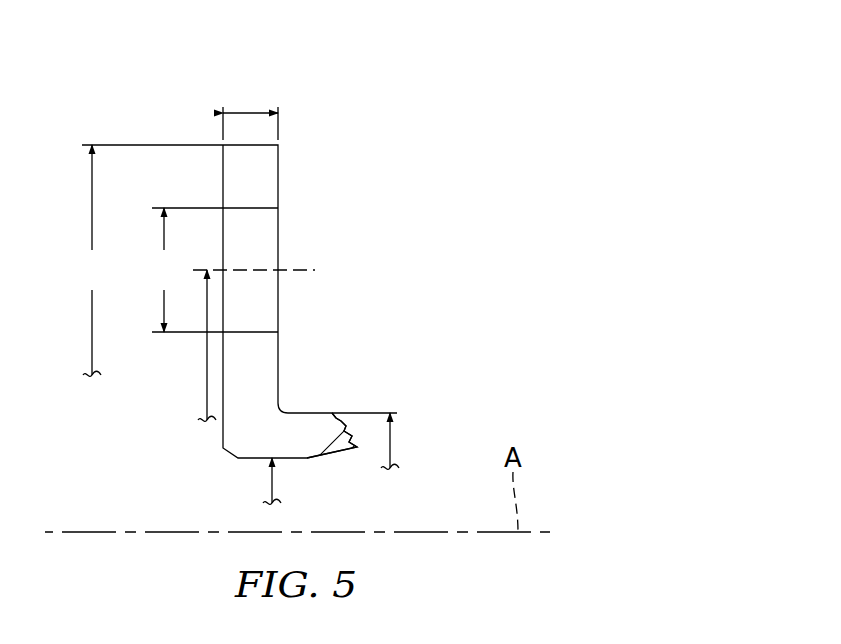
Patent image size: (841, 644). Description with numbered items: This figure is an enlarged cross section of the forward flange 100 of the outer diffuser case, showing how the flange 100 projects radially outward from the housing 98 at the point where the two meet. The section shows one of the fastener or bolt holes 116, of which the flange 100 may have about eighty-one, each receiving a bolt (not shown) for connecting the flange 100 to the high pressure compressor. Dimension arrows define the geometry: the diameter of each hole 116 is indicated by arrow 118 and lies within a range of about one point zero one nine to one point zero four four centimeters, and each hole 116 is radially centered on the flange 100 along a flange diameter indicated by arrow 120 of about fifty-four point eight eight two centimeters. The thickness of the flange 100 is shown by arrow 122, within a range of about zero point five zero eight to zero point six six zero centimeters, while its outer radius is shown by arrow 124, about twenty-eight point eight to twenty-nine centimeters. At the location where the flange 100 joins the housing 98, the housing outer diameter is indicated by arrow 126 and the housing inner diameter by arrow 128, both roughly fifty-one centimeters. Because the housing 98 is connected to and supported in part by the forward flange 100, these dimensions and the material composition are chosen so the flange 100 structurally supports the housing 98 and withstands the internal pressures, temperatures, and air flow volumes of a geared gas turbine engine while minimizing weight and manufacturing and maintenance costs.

The housing 98 is at (327, 430).
The forward flange 100 is at (437, 137).
The bolt hole 116 is at (263, 238).
The hole diameter 118 is at (182, 270).
The flange diameter 120 is at (205, 382).
The flange thickness 122 is at (248, 112).
The outer radius 124 is at (147, 260).
The housing outer diameter 126 is at (391, 452).
The housing inner diameter 128 is at (273, 492).